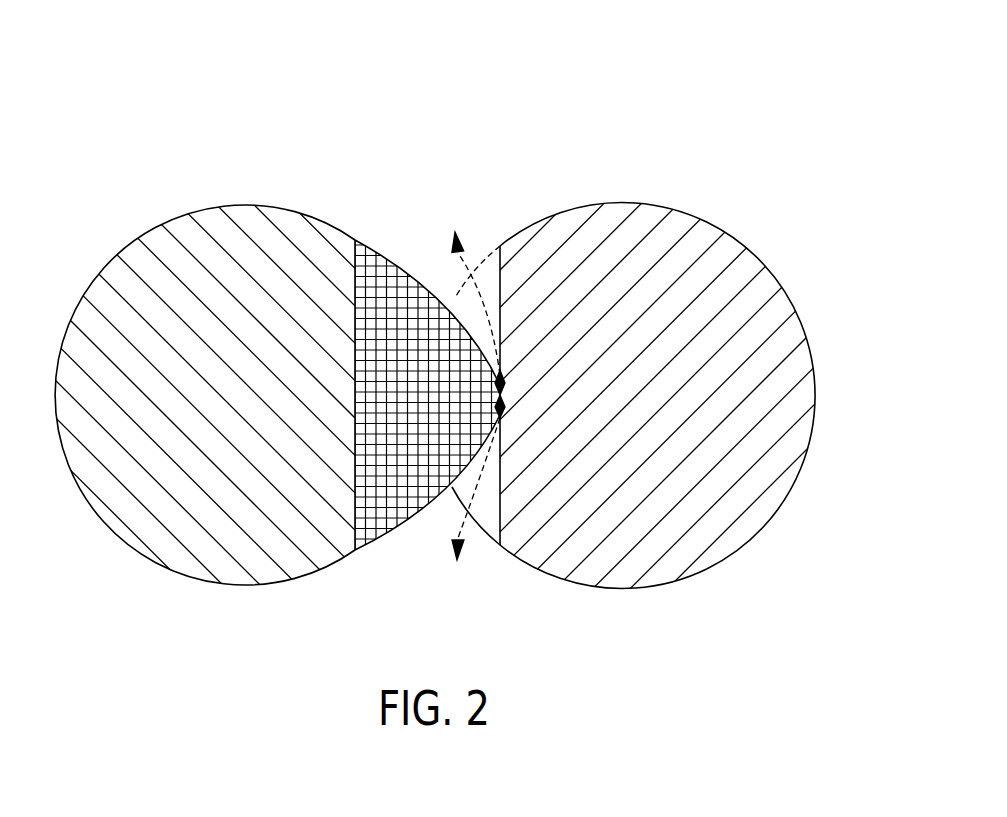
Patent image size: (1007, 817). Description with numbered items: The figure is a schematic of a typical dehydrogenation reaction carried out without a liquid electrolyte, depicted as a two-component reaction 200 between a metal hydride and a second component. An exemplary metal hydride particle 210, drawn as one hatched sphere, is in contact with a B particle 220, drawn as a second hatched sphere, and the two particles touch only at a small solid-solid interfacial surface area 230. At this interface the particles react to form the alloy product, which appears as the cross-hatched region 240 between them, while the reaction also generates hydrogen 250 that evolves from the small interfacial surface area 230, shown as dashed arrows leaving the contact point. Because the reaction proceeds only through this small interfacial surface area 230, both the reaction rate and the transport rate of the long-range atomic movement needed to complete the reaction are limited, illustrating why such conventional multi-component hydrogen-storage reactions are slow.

The two-component reaction 200 is at (112, 100).
The AHx particle 210 is at (798, 362).
The B particle 220 is at (98, 295).
The interfacial surface area 230 is at (512, 372).
The region 240 is at (412, 513).
The hydrogen 250 is at (470, 195).